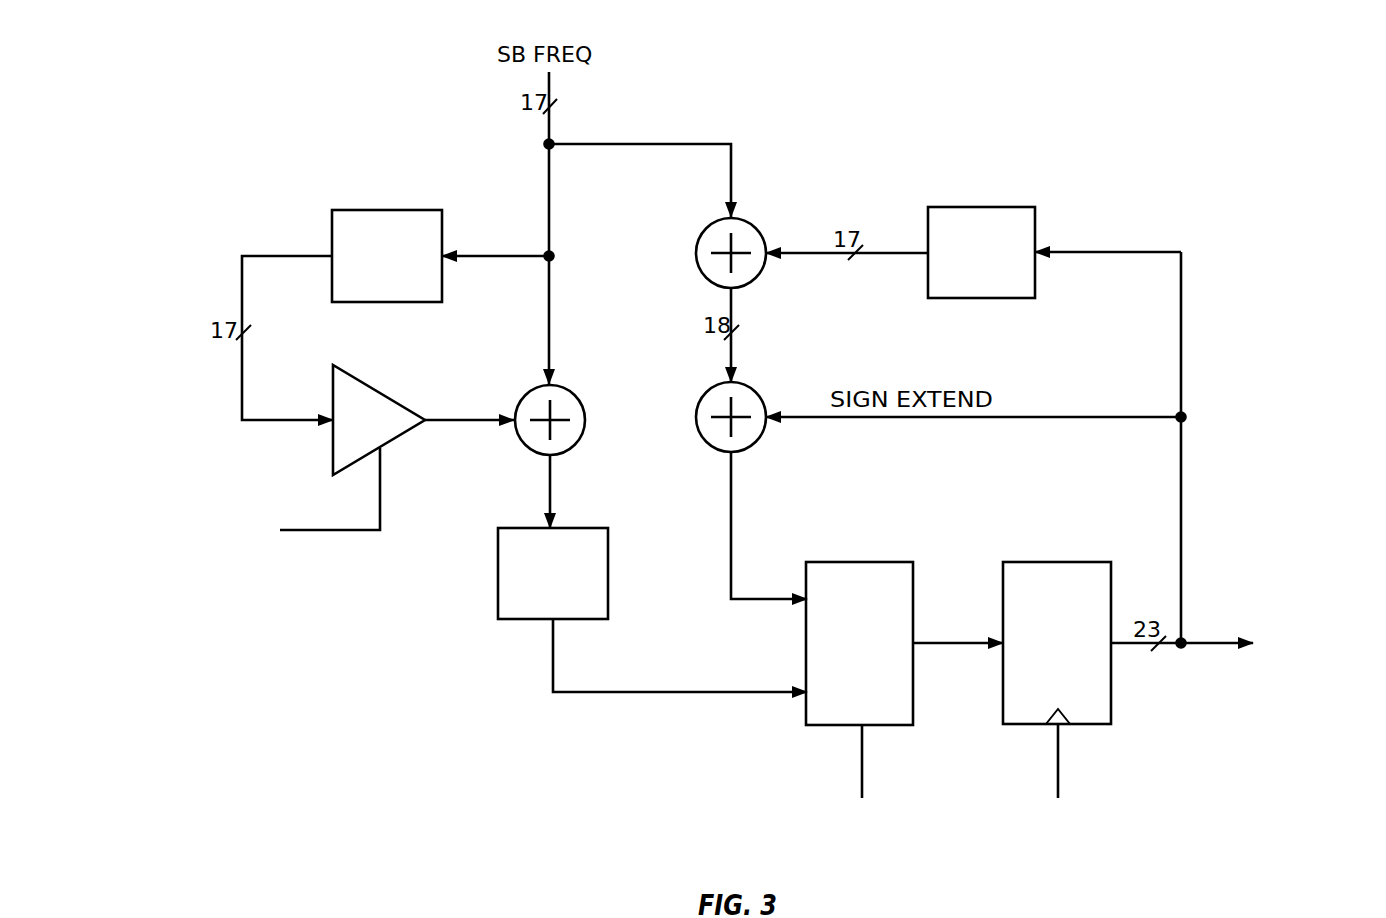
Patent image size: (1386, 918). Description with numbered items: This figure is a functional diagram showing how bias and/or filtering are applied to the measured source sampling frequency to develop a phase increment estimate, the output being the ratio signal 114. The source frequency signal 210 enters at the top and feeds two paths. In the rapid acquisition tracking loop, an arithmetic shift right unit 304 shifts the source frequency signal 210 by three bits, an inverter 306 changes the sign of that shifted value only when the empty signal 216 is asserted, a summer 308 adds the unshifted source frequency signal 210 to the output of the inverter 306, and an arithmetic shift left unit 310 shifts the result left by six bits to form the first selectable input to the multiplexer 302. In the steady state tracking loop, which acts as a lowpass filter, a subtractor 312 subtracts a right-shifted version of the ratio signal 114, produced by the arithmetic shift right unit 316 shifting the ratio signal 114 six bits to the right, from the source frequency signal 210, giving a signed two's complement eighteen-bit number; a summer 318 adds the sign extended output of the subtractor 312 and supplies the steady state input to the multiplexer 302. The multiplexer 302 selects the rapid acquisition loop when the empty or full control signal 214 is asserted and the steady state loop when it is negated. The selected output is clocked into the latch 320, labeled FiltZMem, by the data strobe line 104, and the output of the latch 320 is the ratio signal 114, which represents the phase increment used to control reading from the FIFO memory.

The source frequency signal 210 is at (549, 180).
The arithmetic shift right unit 304 is at (382, 210).
The inverter 306 is at (390, 374).
The empty signal 216 is at (318, 530).
The summer 308 is at (577, 394).
The arithmetic shift left unit 310 is at (590, 528).
The subtractor 312 is at (757, 229).
The arithmetic shift right unit 316 is at (977, 207).
The summer 318 is at (757, 393).
The multiplexer 302 is at (855, 562).
The empty or full control signal 214 is at (862, 760).
The latch 320 is at (1052, 562).
The data strobe line 104 is at (1058, 756).
The ratio signal 114 is at (1214, 644).